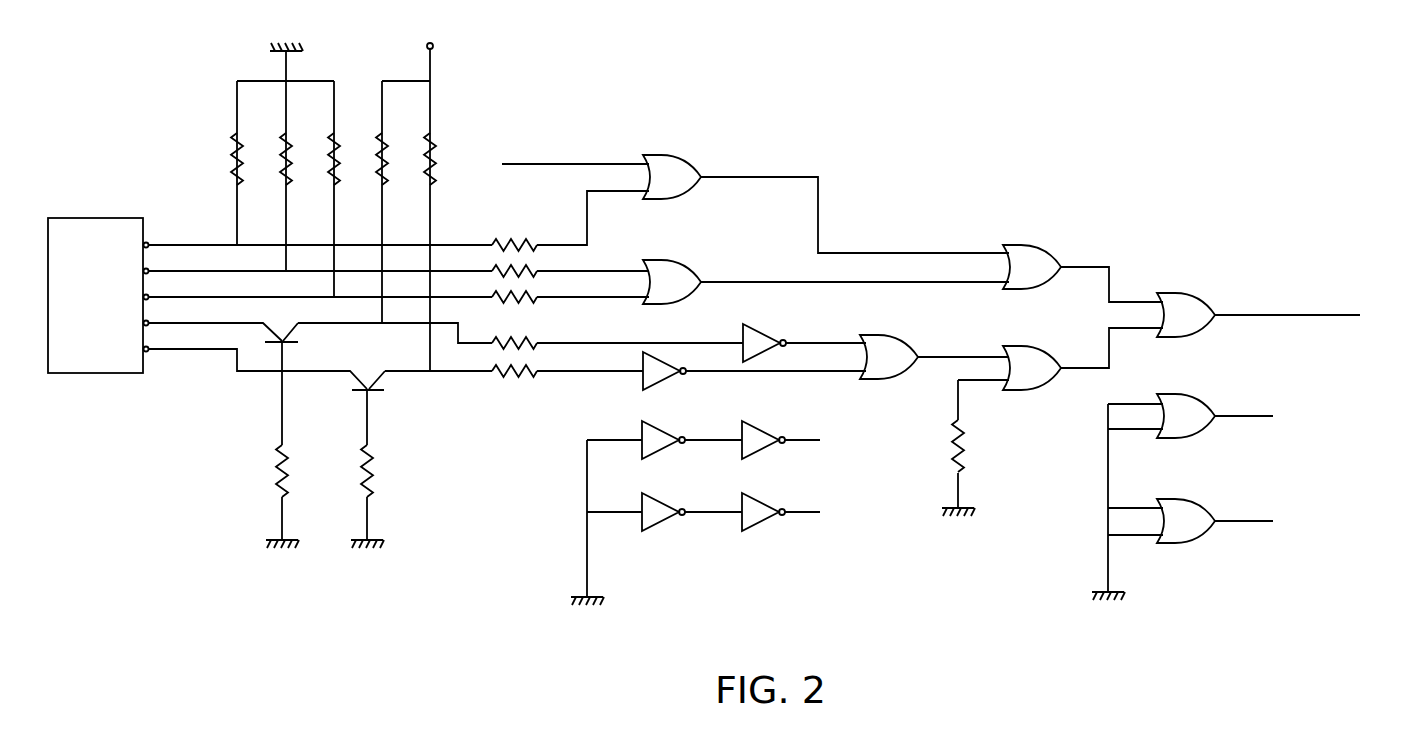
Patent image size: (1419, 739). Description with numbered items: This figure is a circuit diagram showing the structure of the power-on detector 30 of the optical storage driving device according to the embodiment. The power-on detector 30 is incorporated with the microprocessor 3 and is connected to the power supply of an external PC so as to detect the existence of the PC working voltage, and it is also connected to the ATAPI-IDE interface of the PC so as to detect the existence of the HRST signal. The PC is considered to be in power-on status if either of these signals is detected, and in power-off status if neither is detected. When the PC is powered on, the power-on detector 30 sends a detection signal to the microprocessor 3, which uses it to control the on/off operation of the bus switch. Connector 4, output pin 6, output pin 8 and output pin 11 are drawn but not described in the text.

The power-on detector 30 is at (660, 314).
The microprocessor 3 is at (1304, 308).
The connector JP4 4 is at (98, 284).
The OR gate output pin 6 (U13B, U15B) 6 is at (1083, 317).
The OR gate output pin 8 (U13C, U15C) 8 is at (958, 349).
The OR gate output pin 11 (U13D, U15D) 11 is at (1215, 418).